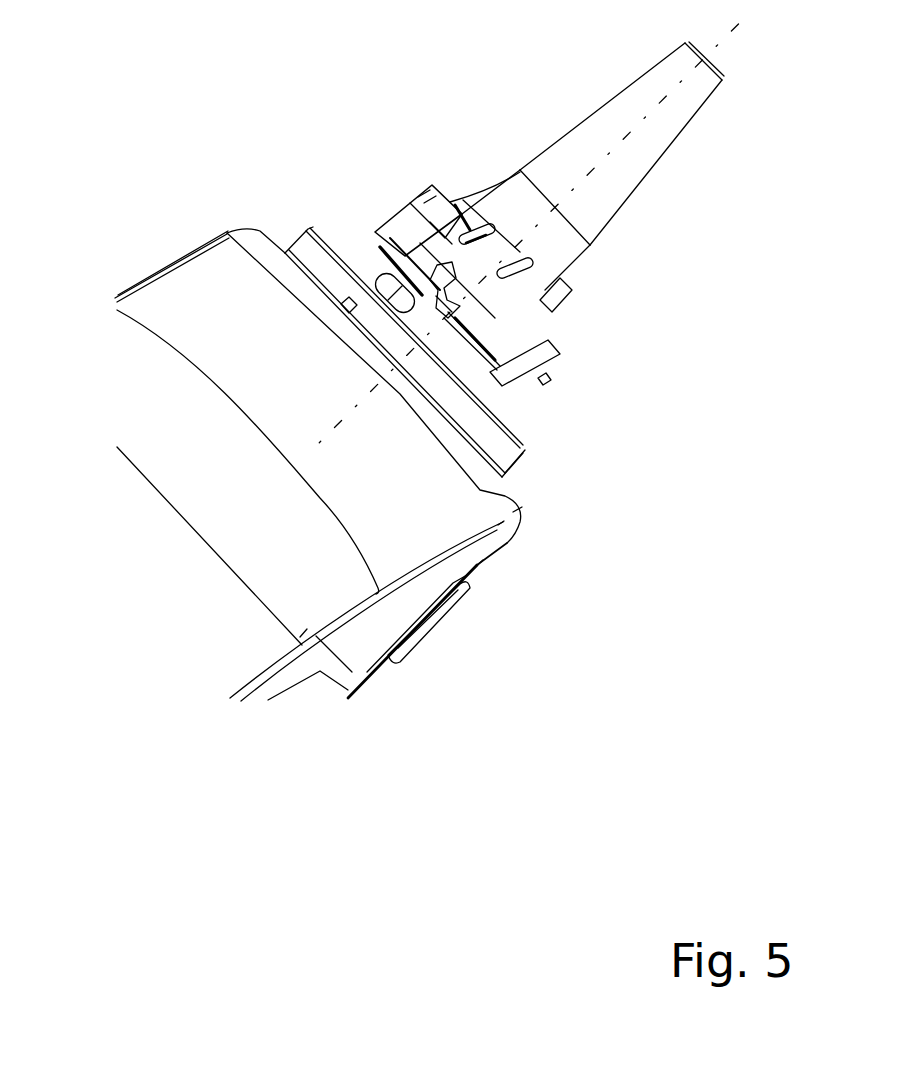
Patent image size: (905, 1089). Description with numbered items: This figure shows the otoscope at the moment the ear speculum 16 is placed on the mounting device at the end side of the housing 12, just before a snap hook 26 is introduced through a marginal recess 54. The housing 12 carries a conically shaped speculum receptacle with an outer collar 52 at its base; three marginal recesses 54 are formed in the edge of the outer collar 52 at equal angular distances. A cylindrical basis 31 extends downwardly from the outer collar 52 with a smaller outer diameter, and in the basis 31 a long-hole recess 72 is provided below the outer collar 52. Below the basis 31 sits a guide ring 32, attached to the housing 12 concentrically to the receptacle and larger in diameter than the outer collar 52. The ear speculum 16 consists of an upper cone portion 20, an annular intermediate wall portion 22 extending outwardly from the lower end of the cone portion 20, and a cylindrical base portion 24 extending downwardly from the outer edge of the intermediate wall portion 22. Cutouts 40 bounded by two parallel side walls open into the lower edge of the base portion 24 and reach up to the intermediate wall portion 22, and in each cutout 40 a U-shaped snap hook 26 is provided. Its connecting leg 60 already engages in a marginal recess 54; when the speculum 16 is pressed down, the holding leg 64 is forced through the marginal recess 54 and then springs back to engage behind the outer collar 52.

The housing 12 is at (502, 549).
The ear speculum 16 is at (549, 233).
The upper cone portion 20 is at (632, 105).
The annular intermediate wall portion 22 is at (454, 262).
The cylindrical base portion 24 is at (405, 206).
The snap hook 26 is at (470, 302).
The cylindrical basis 31 is at (490, 393).
The guide ring 32 is at (508, 455).
The cutout 40 is at (442, 294).
The outer collar 52 is at (440, 275).
The marginal recess 54 is at (462, 313).
The connecting leg 60 is at (458, 300).
The holding leg 64 is at (412, 262).
The long-hole recess 72 is at (228, 234).